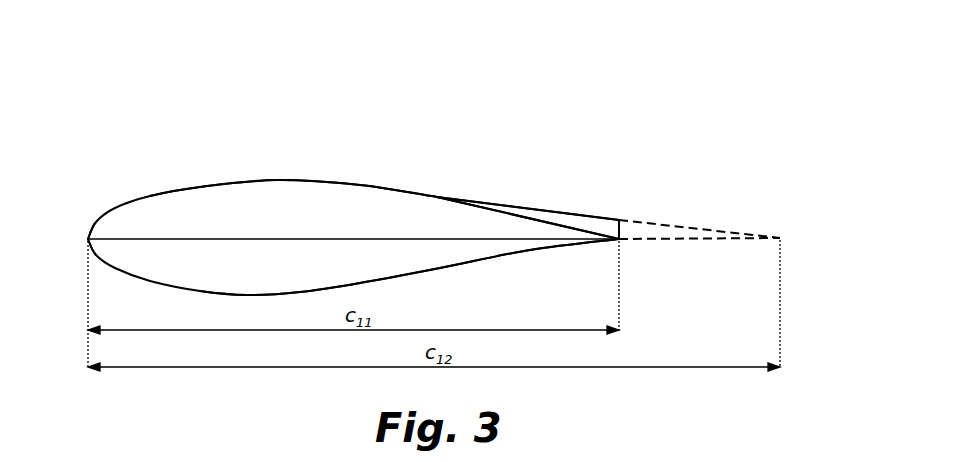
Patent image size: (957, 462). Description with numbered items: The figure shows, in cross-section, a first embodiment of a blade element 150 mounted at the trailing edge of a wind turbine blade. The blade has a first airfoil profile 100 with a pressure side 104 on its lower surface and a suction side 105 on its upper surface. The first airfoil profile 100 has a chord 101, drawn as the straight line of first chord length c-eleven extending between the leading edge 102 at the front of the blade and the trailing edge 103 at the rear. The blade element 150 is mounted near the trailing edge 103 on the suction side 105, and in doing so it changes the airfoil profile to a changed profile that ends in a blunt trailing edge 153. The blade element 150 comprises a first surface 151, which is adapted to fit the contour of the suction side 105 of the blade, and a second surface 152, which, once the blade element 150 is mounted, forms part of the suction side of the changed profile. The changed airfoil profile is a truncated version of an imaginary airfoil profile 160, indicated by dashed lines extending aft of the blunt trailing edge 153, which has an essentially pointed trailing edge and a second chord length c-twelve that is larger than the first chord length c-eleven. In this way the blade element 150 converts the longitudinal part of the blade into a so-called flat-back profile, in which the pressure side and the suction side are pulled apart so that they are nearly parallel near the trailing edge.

The first airfoil profile 100 is at (421, 173).
The chord 101 is at (455, 238).
The leading edge 102 is at (88, 239).
The trailing edge 103 is at (621, 240).
The pressure side 104 is at (408, 274).
The suction side 105 is at (306, 181).
The blade element 150 is at (589, 219).
The first surface 151 is at (523, 222).
The second surface 152 is at (565, 212).
The blunt trailing edge 153 is at (630, 229).
The imaginary airfoil profile 160 is at (700, 240).